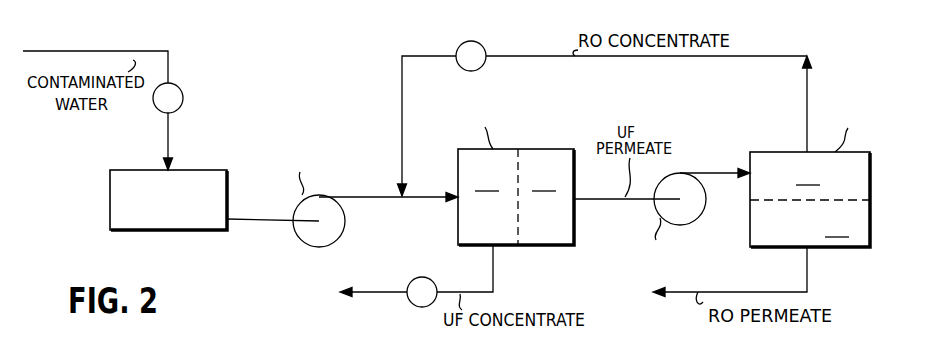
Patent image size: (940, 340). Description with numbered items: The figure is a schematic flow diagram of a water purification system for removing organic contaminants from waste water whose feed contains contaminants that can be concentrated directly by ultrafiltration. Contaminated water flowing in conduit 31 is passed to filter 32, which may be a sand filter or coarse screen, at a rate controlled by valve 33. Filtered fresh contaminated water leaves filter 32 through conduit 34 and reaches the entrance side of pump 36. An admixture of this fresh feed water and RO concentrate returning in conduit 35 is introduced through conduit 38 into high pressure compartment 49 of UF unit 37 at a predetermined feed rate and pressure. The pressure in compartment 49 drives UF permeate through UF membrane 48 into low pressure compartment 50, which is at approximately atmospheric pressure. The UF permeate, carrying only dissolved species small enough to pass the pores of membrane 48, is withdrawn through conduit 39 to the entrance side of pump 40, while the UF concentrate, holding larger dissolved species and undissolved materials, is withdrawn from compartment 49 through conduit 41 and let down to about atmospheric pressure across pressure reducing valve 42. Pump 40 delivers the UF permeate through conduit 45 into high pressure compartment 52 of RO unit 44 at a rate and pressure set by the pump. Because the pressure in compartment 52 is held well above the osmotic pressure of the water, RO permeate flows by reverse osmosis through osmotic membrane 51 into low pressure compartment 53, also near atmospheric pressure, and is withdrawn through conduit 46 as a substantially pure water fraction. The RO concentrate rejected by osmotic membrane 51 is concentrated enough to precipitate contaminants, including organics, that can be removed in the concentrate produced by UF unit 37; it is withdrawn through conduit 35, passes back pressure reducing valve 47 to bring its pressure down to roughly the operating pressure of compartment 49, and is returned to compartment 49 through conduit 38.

The conduit 31 is at (168, 72).
The filter 32 is at (118, 194).
The valve 33 is at (183, 98).
The conduit 34 is at (272, 221).
The conduit 35 is at (402, 100).
The pump 36 is at (332, 232).
The UF unit 37 is at (458, 168).
The conduit 38 is at (378, 194).
The conduit 39 is at (607, 202).
The pump 40 is at (693, 212).
The conduit 41 is at (493, 266).
The pressure reducing valve 42 is at (427, 281).
The RO unit 44 is at (870, 208).
The conduit 45 is at (710, 172).
The conduit 46 is at (807, 268).
The back pressure reducing valve 47 is at (466, 42).
The UF membrane 48 is at (518, 218).
The high pressure compartment 49 is at (488, 180).
The low pressure compartment 50 is at (545, 180).
The osmotic membrane 51 is at (795, 203).
The high pressure compartment 52 is at (809, 174).
The low pressure compartment 53 is at (838, 226).